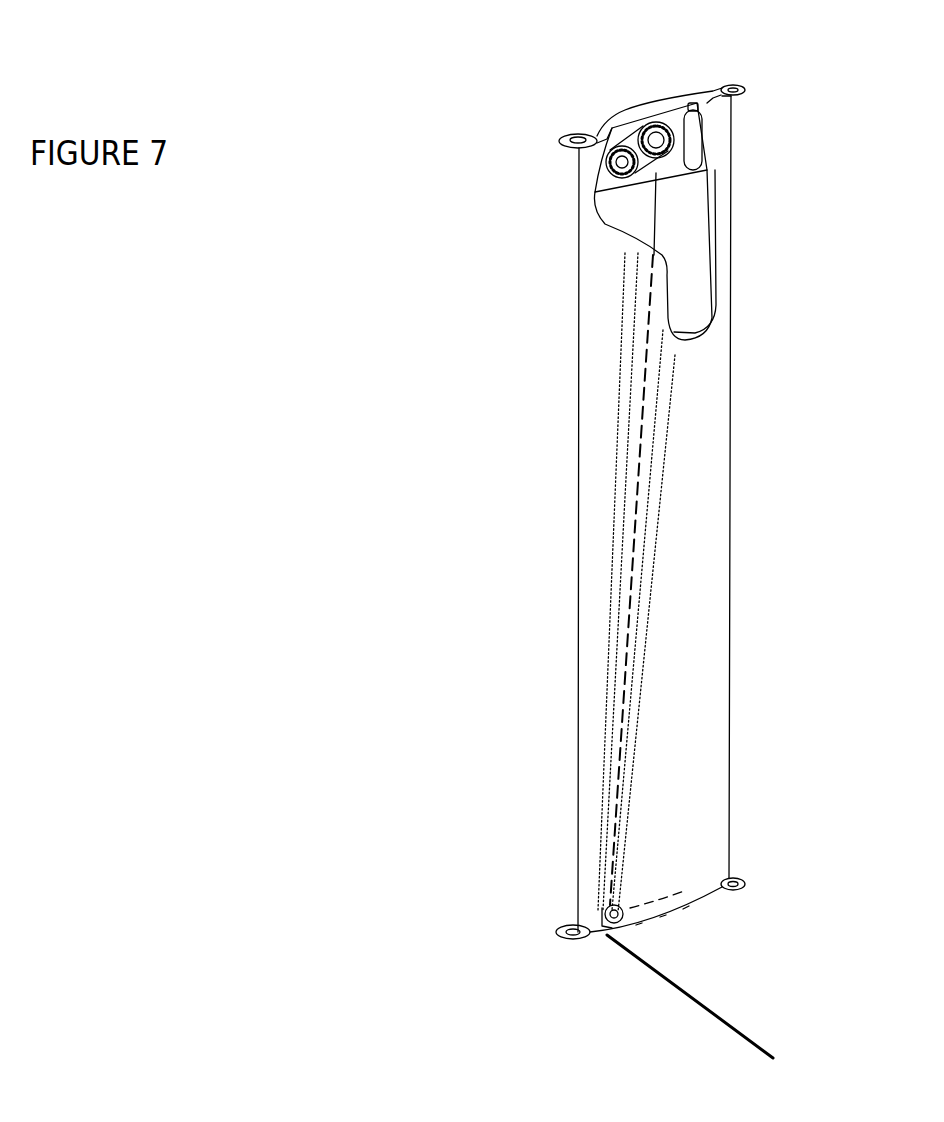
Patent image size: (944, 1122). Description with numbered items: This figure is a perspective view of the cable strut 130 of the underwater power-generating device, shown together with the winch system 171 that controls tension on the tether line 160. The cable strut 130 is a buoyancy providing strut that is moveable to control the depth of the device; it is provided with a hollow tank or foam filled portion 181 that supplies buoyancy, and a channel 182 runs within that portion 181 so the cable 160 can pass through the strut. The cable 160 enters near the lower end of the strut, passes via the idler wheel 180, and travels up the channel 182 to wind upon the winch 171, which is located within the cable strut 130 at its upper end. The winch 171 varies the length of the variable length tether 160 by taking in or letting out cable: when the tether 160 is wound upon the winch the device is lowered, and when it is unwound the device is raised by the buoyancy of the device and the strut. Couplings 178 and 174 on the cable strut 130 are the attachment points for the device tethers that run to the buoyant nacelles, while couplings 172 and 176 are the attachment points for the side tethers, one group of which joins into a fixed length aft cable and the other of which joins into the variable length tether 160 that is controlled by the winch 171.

The cable strut 130 is at (730, 607).
The variable length tether 160 is at (693, 1000).
The winch system 171 is at (652, 148).
The coupling 172 is at (567, 133).
The coupling 174 is at (738, 82).
The coupling 176 is at (560, 952).
The coupling 178 is at (742, 903).
The idler wheel 180 is at (617, 937).
The hollow tank or foam filled portion 181 is at (695, 440).
The channel 182 is at (620, 537).